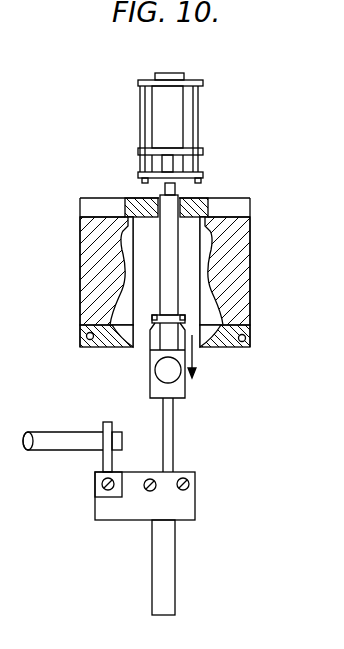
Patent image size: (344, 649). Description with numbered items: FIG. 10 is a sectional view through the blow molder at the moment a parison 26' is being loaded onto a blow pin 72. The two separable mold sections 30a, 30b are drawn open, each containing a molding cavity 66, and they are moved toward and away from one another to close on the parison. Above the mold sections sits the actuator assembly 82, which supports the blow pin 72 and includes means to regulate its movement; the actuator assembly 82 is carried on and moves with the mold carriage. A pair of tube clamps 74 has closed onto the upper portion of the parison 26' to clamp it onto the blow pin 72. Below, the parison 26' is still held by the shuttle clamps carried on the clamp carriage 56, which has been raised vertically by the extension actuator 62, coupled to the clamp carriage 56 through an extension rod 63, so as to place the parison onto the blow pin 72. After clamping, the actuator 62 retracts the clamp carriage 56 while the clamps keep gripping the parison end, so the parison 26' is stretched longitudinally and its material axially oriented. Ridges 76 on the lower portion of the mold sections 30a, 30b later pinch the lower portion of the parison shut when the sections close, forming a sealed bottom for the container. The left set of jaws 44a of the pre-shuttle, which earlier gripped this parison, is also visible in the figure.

The actuator assembly 82 is at (228, 130).
The blow pin 72 is at (170, 176).
The tube clamps 74 is at (133, 203).
The mold section 30a is at (80, 262).
The mold section 30b is at (238, 243).
The molding cavity 66 is at (125, 302).
The parison 26' is at (233, 255).
The ridges 76 is at (133, 340).
The clamp carriage 56 is at (185, 385).
The extension rod 63 is at (168, 450).
The left set of jaws 44a is at (104, 458).
The actuator 62 is at (170, 568).